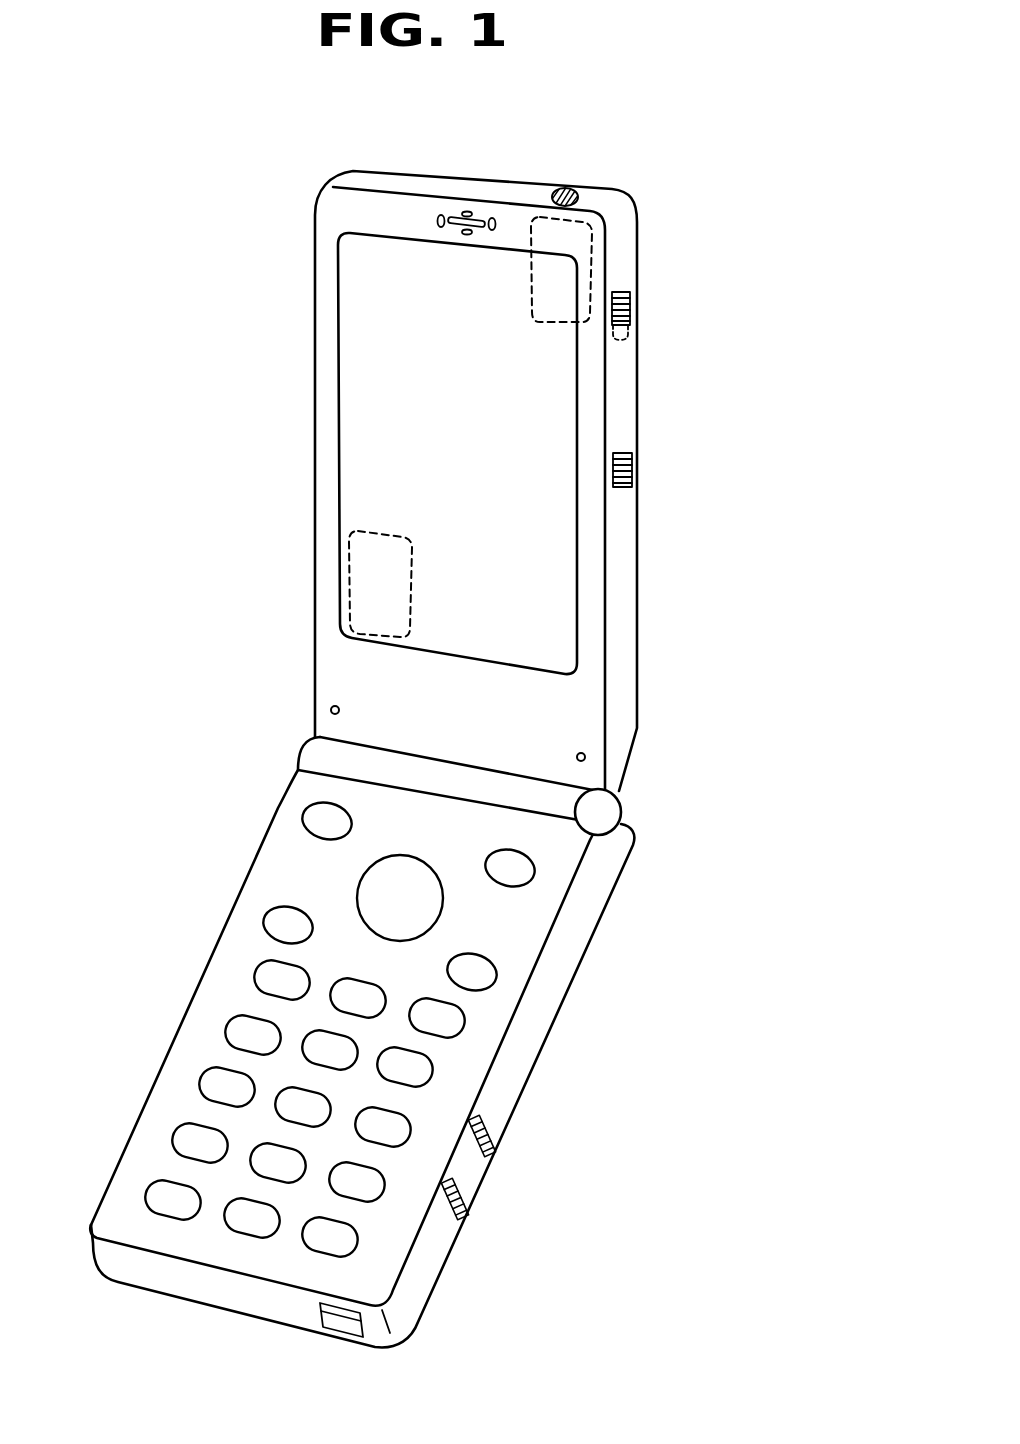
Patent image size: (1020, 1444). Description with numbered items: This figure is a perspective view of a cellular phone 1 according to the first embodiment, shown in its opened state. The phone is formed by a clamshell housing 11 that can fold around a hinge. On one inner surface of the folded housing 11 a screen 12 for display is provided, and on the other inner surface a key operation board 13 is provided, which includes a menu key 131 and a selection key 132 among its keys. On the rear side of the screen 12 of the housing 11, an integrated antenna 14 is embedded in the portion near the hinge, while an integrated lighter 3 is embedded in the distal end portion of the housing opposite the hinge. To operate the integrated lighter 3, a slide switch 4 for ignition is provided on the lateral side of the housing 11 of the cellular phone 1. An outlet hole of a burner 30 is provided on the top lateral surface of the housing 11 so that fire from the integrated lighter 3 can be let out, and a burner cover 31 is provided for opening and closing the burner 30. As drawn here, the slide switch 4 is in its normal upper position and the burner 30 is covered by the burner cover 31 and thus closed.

The cellular phone 1 is at (272, 260).
The integrated lighter 3 is at (590, 237).
The slide switch 4 is at (630, 312).
The clamshell housing 11 is at (617, 593).
The screen 12 is at (363, 457).
The key operation board 13 is at (468, 1088).
The integrated antenna 14 is at (348, 598).
The burner 30 is at (593, 200).
The burner cover 31 is at (564, 187).
The menu key 131 is at (497, 962).
The selection key 132 is at (375, 887).